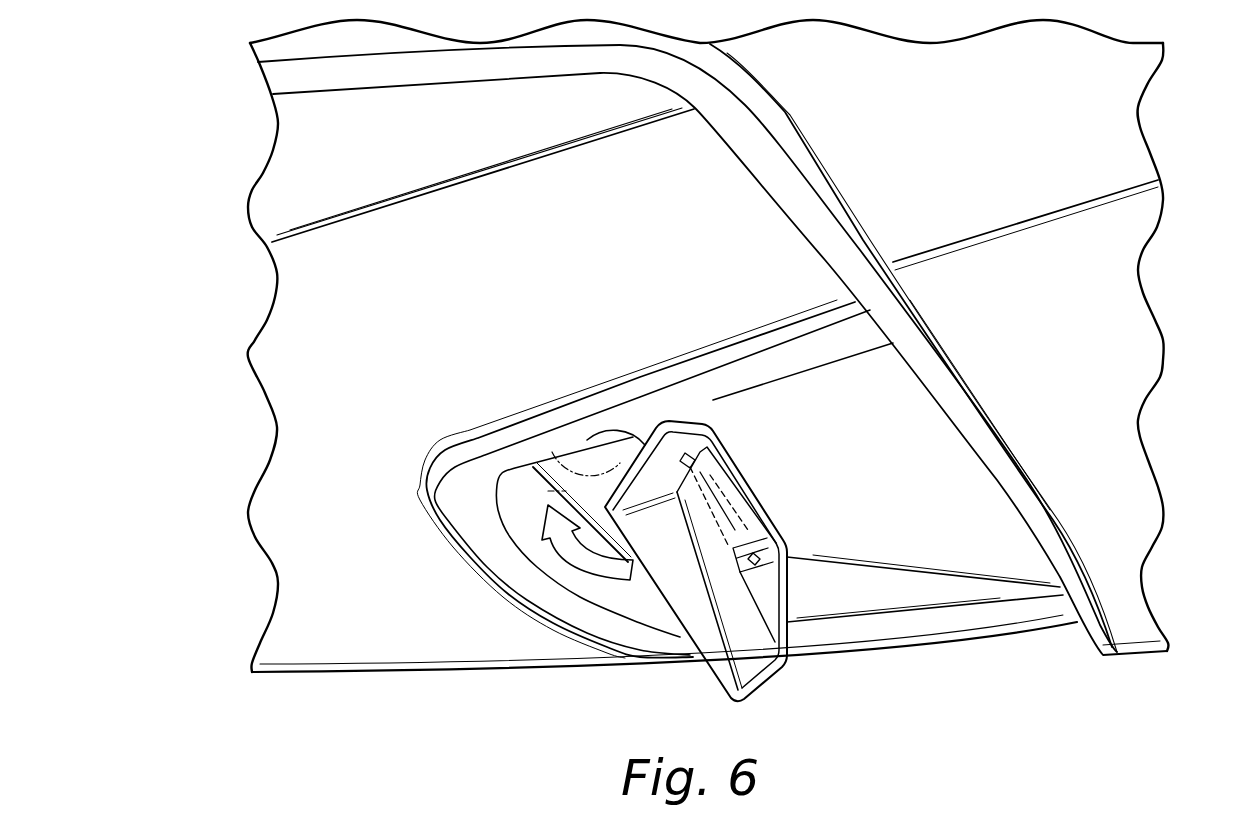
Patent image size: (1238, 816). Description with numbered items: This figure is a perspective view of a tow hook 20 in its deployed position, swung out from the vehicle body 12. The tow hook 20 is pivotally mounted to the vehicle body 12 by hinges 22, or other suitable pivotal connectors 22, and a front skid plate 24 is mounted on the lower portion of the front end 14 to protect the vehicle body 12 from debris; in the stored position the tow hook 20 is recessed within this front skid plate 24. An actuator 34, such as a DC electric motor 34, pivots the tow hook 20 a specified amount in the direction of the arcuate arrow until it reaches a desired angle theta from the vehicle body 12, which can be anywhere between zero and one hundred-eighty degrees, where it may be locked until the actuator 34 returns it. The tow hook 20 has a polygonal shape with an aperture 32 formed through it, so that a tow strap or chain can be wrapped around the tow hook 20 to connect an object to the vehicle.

The vehicle body 12 is at (1110, 337).
The front end 14 is at (280, 160).
The front skid plate 24 is at (283, 384).
The tow hook 20 is at (783, 667).
The hinges 22 is at (700, 452).
The actuator 34 is at (700, 475).
The aperture 32 is at (710, 540).